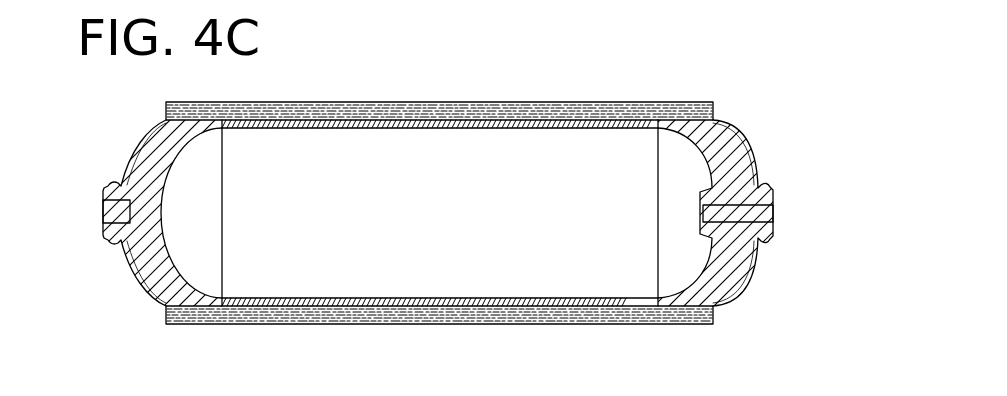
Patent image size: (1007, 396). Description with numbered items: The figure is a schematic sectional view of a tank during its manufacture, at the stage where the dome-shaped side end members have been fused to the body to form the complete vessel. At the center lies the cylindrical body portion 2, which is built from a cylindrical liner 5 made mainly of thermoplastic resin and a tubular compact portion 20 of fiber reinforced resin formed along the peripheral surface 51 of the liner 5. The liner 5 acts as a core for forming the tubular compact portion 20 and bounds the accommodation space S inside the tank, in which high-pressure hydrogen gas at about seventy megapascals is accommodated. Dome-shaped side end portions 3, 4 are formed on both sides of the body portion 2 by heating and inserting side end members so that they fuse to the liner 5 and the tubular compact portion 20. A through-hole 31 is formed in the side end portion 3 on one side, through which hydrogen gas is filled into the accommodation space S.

The body portion 2 is at (595, 112).
The tubular compact portion 20 is at (448, 101).
The side end portion 3 is at (733, 262).
The through-hole 31 is at (775, 213).
The side end portion 4 is at (142, 262).
The liner 5 is at (597, 298).
The peripheral surface 51 is at (345, 315).
The accommodation space S is at (447, 270).